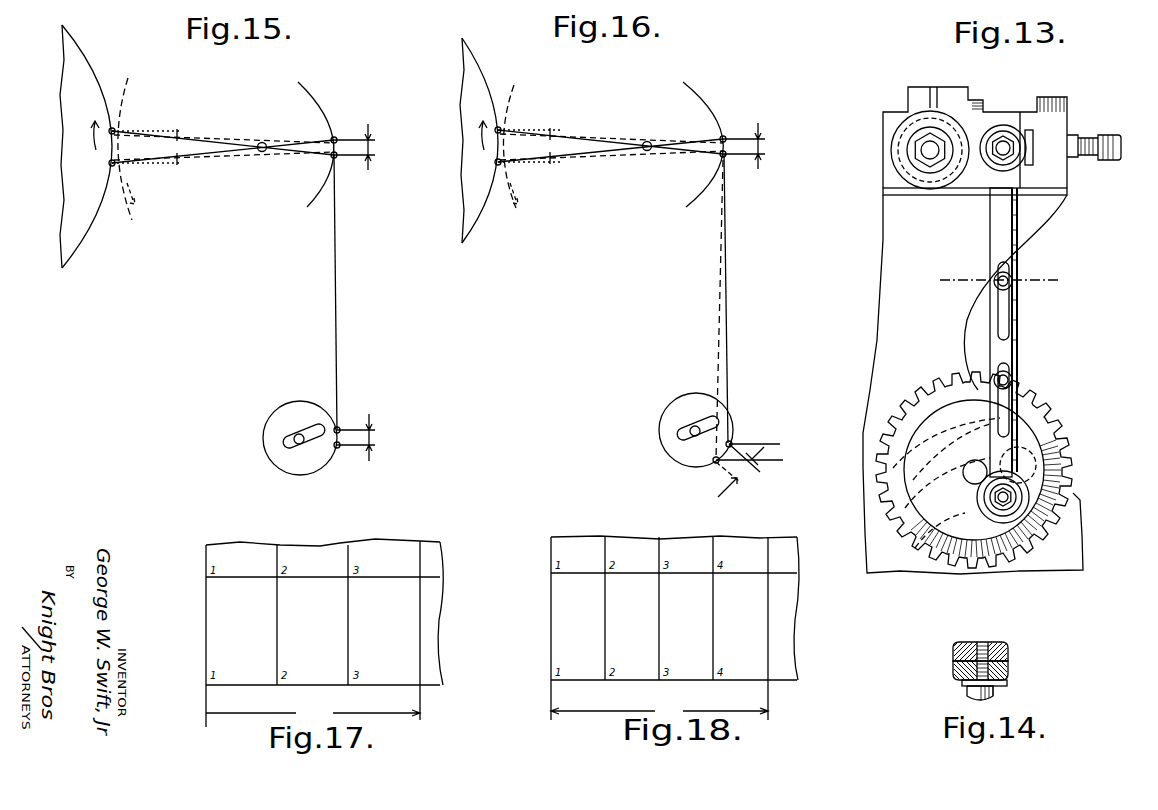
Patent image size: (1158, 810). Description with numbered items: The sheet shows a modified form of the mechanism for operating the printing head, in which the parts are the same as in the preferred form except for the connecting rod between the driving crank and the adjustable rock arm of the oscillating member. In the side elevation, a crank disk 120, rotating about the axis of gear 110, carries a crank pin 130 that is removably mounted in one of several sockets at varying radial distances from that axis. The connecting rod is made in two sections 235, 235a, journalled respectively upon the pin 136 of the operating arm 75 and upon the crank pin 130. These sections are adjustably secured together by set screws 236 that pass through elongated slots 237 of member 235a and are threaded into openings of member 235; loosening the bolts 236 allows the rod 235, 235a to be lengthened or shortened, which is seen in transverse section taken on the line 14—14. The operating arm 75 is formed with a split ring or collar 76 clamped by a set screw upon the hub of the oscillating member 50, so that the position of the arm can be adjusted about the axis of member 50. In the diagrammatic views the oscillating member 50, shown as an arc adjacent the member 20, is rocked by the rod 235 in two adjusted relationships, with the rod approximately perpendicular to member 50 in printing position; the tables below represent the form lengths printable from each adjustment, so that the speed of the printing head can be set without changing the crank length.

In FIG. 15, the cylinder (rotary member) 20 is at (83, 72).
In FIG. 16, the cylinder (rotary member) 20 is at (480, 77).
In FIG. 15, the operating arm 75 is at (212, 153).
In FIG. 16, the operating arm 75 is at (594, 153).
In FIG. 15, the oscillating member 50 is at (292, 142).
In FIG. 16, the oscillating member 50 is at (674, 142).
In FIG. 15, the pin 136 is at (330, 157).
In FIG. 16, the pin 136 is at (723, 157).
In FIG. 13, the pin 136 is at (1002, 140).
In FIG. 15, the connecting rod section 235 is at (337, 247).
In FIG. 16, the connecting rod section 235 is at (727, 230).
In FIG. 13, the connecting rod section 235 is at (1008, 213).
In FIG. 14, the connecting rod section 235 is at (1003, 646).
In FIG. 15, the connecting rod section 235a is at (337, 333).
In FIG. 16, the connecting rod section 235a is at (728, 343).
In FIG. 13, the connecting rod section 235a is at (1008, 348).
In FIG. 14, the connecting rod section 235a is at (1010, 665).
In FIG. 13, the split ring or collar 76 is at (952, 95).
In FIG. 13, the elongated slots 237 is at (1000, 315).
In FIG. 14, the elongated slots 237 is at (955, 665).
In FIG. 13, the set screws 236 is at (1013, 283).
In FIG. 14, the set screws 236 is at (965, 690).
In FIG. 13, the section line 14— 14 is at (958, 277).
In FIG. 13, the gear 110 is at (1035, 405).
In FIG. 13, the crank pin 130 is at (997, 497).
In FIG. 13, the crank disk 120 is at (937, 542).